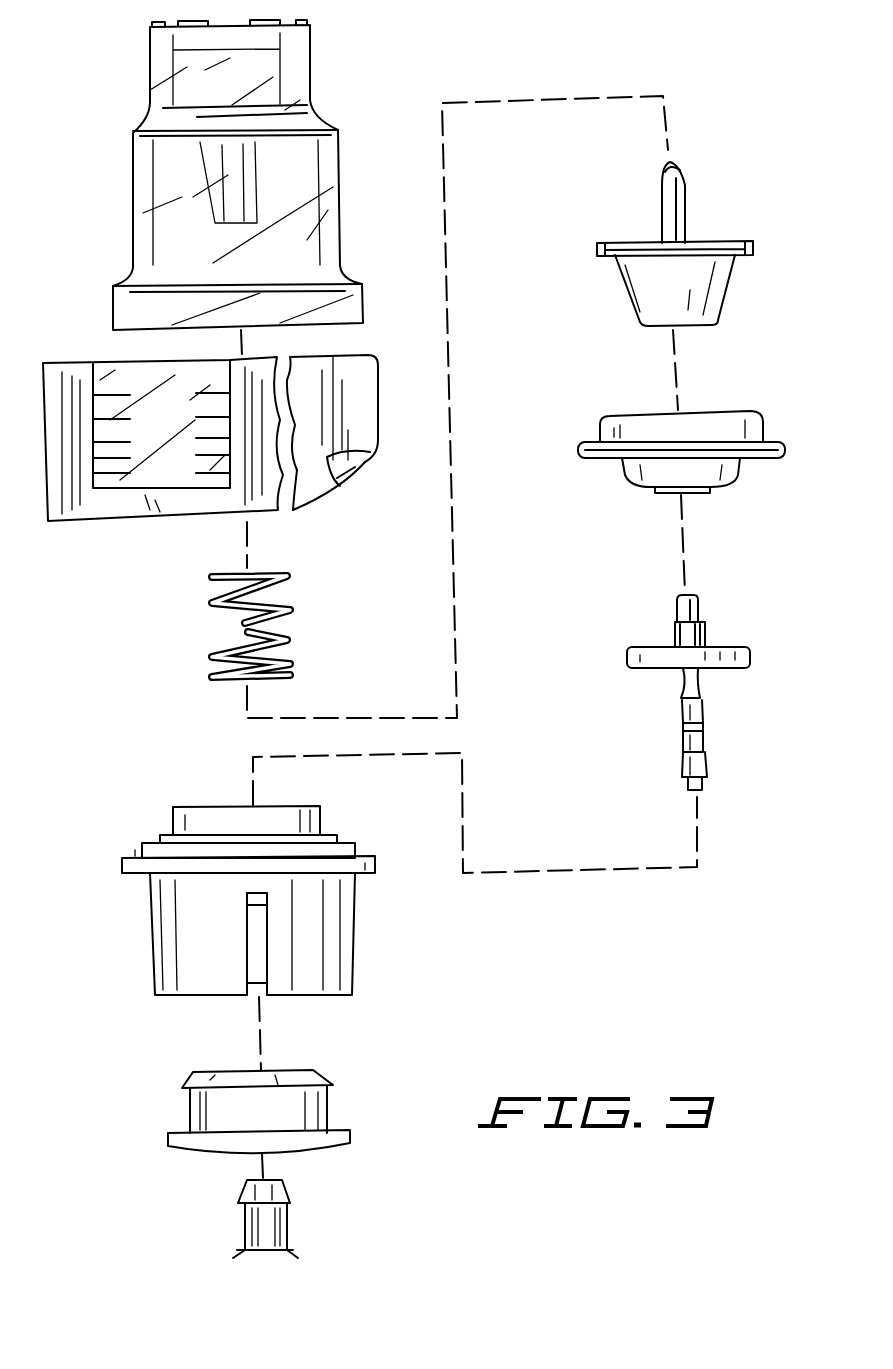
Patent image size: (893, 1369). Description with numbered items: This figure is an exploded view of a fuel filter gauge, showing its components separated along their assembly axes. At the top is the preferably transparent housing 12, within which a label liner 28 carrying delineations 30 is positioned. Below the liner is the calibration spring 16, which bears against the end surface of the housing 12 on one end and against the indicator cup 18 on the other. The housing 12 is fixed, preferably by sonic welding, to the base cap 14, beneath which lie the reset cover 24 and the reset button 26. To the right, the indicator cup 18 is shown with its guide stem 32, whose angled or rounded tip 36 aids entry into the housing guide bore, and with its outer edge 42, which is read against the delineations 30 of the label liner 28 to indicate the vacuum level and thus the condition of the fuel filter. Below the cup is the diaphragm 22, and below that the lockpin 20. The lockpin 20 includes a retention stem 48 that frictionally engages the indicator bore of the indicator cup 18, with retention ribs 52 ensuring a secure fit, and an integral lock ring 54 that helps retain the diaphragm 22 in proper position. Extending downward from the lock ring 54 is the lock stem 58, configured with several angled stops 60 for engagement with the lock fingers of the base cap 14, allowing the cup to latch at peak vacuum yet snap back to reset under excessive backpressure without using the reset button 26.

The housing 12 is at (312, 80).
The label liner 28 is at (88, 343).
The delineations 30 is at (193, 428).
The calibration spring 16 is at (210, 650).
The base cap 14 is at (355, 948).
The reset cover 24 is at (190, 1110).
The reset button 26 is at (288, 1220).
The indicator cup 18 is at (661, 227).
The outer edge 42 is at (597, 250).
The guide stem 32 is at (685, 205).
The tip 36 is at (675, 165).
The diaphragm 22 is at (765, 420).
The lockpin 20 is at (706, 671).
The retention stem 48 is at (697, 600).
The retention ribs 52 is at (678, 635).
The lock ring 54 is at (665, 660).
The lock stem 58 is at (685, 740).
The angled stops 60 is at (705, 745).